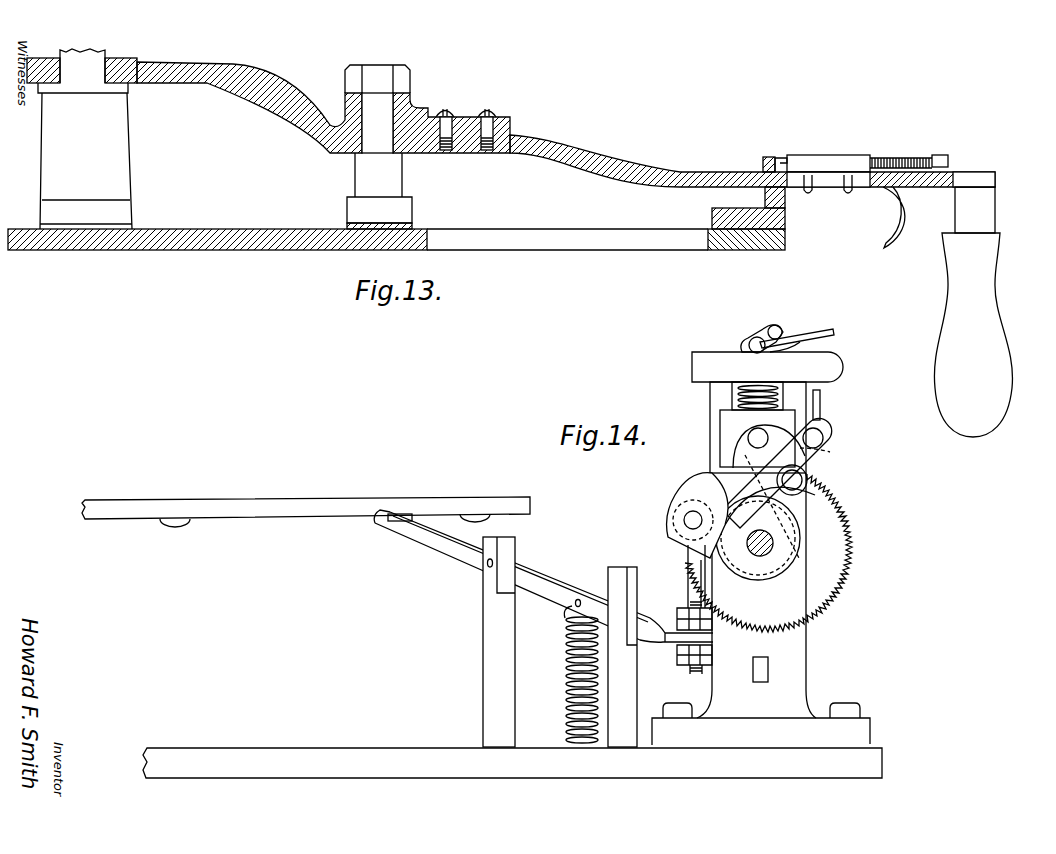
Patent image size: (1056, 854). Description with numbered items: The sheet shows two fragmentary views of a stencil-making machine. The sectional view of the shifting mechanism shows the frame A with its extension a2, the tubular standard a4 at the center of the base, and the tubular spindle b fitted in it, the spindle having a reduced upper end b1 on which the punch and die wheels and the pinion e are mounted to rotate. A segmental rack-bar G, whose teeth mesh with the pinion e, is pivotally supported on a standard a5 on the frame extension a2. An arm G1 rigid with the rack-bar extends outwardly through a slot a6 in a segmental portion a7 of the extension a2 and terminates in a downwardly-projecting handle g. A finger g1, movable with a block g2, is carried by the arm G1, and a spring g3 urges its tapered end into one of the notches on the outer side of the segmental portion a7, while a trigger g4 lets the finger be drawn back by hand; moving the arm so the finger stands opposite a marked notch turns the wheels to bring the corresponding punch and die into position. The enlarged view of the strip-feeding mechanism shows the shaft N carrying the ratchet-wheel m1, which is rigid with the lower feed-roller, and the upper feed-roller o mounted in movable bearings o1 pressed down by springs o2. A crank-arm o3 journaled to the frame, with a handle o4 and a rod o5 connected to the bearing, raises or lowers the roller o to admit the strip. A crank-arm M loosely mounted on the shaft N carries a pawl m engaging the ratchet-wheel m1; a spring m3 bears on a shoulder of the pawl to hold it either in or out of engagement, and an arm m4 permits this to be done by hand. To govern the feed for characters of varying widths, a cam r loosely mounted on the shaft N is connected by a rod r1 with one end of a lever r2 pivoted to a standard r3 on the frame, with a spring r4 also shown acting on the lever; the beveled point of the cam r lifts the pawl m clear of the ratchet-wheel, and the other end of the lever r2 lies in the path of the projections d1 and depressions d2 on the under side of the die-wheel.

In FIG. 13, the frame A is at (358, 253).
In FIG. 14, the frame A is at (512, 778).
In FIG. 13, the frame extension a2 is at (698, 247).
In FIG. 13, the tubular standard a4 is at (132, 217).
In FIG. 13, the standard a5 is at (402, 184).
In FIG. 13, the slot a6 is at (786, 193).
In FIG. 13, the segmental portion a7 is at (787, 227).
In FIG. 13, the tubular spindle b is at (128, 157).
In FIG. 13, the reduced upper end b1 is at (97, 58).
In FIG. 13, the pinion e is at (69, 58).
In FIG. 13, the segmental rack-bar G is at (323, 107).
In FIG. 13, the arm G1 is at (752, 164).
In FIG. 13, the handle g is at (996, 312).
In FIG. 13, the finger g1 is at (784, 157).
In FIG. 13, the block g2 is at (827, 155).
In FIG. 13, the spring g3 is at (897, 158).
In FIG. 13, the trigger g4 is at (903, 220).
In FIG. 14, the feed-roller o is at (577, 598).
In FIG. 14, the movable bearings o1 is at (720, 419).
In FIG. 14, the springs o2 is at (735, 395).
In FIG. 14, the crank-arm o3 is at (757, 337).
In FIG. 14, the handle o4 is at (804, 336).
In FIG. 14, the rod o5 is at (782, 336).
In FIG. 14, the pawl m is at (740, 432).
In FIG. 14, the ratchet-wheel m1 is at (826, 588).
In FIG. 14, the spring m3 is at (827, 446).
In FIG. 14, the arm m4 is at (821, 405).
In FIG. 14, the crank-arm M is at (805, 510).
In FIG. 14, the shaft N is at (775, 545).
In FIG. 14, the cam r is at (680, 503).
In FIG. 14, the rod r1 is at (686, 582).
In FIG. 14, the lever r2 is at (542, 590).
In FIG. 14, the standard r3 is at (483, 637).
In FIG. 14, the spring r4 is at (566, 657).
In FIG. 14, the projections d1 is at (512, 526).
In FIG. 14, the depressions d2 is at (400, 512).